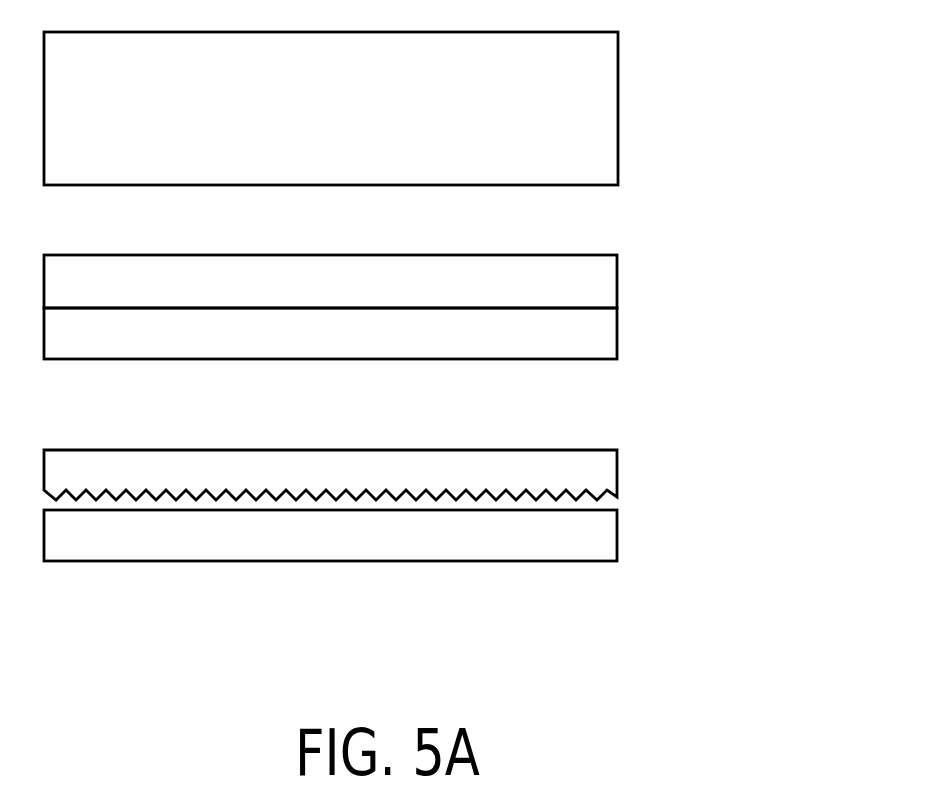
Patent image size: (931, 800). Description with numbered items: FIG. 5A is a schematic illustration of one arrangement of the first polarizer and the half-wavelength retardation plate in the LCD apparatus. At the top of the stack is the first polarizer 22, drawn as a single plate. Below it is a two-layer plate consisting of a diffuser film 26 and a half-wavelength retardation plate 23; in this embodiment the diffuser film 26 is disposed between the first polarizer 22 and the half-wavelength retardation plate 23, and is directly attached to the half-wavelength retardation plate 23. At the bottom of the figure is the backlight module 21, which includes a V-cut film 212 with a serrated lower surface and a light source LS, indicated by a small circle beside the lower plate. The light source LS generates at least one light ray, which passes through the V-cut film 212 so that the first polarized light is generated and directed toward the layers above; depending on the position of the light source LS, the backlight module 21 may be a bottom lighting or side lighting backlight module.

The first polarizer 22 is at (596, 110).
The diffuser film 26 is at (608, 283).
The half-wavelength retardation plate 23 is at (608, 341).
The backlight module 21 is at (453, 495).
The V-cut film 212 is at (605, 471).
The light source LS is at (412, 529).